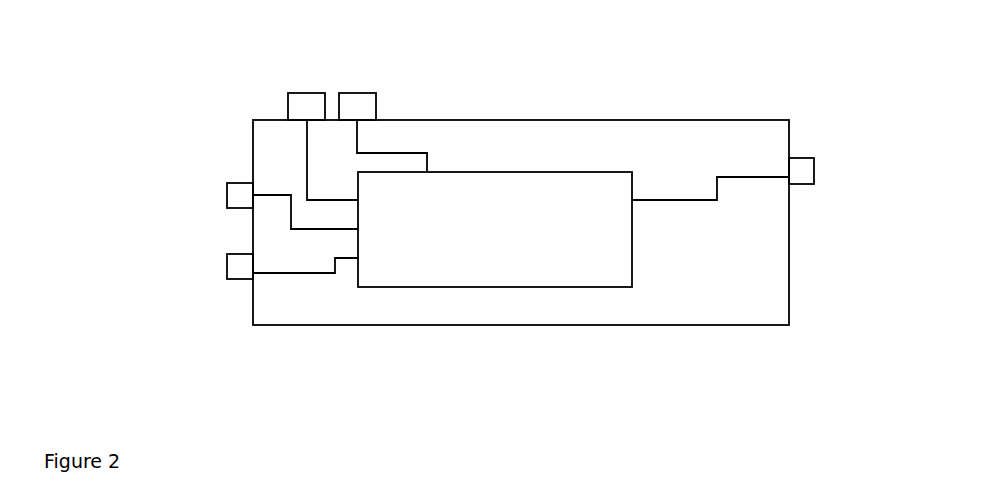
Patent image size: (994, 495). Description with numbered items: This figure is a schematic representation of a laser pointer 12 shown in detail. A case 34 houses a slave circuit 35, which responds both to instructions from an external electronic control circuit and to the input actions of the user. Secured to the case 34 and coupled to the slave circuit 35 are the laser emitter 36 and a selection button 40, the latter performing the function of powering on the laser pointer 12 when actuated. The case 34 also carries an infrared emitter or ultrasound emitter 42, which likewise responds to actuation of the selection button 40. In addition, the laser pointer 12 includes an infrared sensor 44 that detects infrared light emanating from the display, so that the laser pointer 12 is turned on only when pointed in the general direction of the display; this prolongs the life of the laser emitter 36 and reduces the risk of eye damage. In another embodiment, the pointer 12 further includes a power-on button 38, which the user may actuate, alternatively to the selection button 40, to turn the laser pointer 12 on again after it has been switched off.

The laser pointer 12 is at (371, 408).
The case 34 is at (653, 325).
The slave circuit 35 is at (493, 287).
The laser emitter 36 is at (227, 183).
The power-on button 38 is at (308, 93).
The selection button 40 is at (365, 93).
The infrared emitter or ultrasound emitter 42 is at (814, 170).
The infrared sensor 44 is at (227, 272).